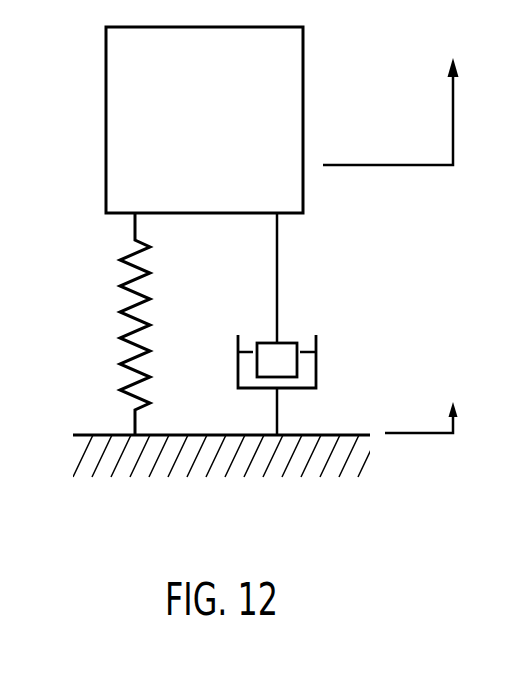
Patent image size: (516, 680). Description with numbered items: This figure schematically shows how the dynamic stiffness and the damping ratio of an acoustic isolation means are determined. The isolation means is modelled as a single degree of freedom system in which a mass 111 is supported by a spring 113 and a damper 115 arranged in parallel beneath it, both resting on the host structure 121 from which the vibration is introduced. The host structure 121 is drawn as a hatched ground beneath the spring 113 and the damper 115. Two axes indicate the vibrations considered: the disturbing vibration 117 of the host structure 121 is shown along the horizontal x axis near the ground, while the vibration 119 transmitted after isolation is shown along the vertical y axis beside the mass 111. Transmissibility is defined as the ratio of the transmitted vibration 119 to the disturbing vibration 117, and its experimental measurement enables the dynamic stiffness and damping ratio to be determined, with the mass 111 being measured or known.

The mass 111 is at (227, 128).
The spring 113 is at (120, 318).
The damper 115 is at (316, 341).
The disturbing vibration 117 is at (420, 433).
The transmitted vibration 119 is at (453, 112).
The host structure 121 is at (172, 463).